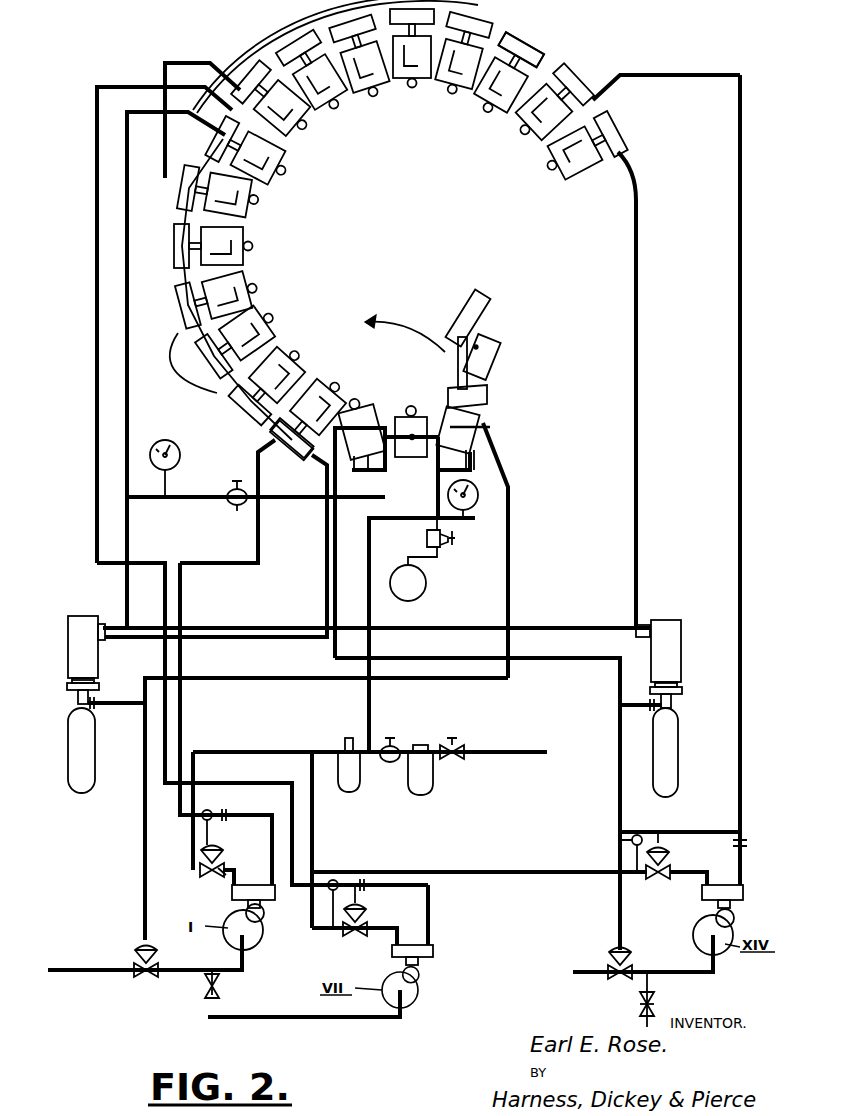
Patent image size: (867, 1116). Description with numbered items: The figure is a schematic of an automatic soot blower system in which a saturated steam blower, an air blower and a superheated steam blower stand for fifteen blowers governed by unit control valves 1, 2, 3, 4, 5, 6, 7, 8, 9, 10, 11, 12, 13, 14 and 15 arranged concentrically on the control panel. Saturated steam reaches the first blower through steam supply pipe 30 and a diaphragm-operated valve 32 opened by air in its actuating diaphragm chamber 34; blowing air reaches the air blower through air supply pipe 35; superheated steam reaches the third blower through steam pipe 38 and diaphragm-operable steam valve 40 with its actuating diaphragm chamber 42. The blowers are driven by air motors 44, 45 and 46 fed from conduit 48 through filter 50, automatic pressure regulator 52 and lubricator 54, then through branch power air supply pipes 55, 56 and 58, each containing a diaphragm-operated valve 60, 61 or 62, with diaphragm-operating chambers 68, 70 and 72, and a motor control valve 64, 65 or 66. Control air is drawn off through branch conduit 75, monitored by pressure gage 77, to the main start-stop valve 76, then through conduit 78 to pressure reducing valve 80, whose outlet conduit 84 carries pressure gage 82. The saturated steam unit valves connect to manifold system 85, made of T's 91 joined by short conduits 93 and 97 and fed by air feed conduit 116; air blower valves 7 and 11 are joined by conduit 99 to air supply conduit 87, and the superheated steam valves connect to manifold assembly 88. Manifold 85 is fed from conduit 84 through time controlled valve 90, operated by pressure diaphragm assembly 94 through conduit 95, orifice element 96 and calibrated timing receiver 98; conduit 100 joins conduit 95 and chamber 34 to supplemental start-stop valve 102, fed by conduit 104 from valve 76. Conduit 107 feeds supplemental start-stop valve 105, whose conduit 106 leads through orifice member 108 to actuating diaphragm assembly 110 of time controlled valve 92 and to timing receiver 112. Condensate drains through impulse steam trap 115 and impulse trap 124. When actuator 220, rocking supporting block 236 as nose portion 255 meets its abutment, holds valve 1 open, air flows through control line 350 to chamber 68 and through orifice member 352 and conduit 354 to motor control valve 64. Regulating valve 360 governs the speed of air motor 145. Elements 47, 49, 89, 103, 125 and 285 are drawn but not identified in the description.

The unit control valve 1 is at (312, 413).
The unit control valve 2 is at (271, 382).
The unit control valve 3 is at (243, 337).
The unit control valve 4 is at (223, 297).
The unit control valve 5 is at (222, 246).
The unit control valve 6 is at (224, 193).
The unit control valve 7 is at (250, 154).
The unit control valve 8 is at (275, 108).
The unit control valve 9 is at (315, 79).
The unit control valve 10 is at (362, 64).
The unit control valve 11 is at (412, 60).
The unit control valve 12 is at (461, 65).
The unit control valve 13 is at (505, 81).
The unit control valve 14 is at (549, 107).
The unit control valve 15 is at (579, 149).
The steam supply pipe 30 is at (110, 975).
The diaphragm-operated valve 32 is at (146, 978).
The actuating diaphragm chamber 34 is at (135, 952).
The air supply pipe 35 is at (320, 1020).
The steam pipe 38 is at (575, 976).
The diaphragm-operable steam valve 40 is at (600, 975).
The actuating diaphragm chamber 42 is at (628, 950).
The air motor 44 is at (256, 916).
The air motor 45 is at (414, 975).
The air motor 46 is at (730, 918).
The pressure line 47 is at (97, 403).
The conduit 48 is at (530, 755).
The pressure line 49 is at (742, 545).
The filter 50 is at (432, 790).
The automatic pressure regulator 52 is at (396, 746).
The lubricator 54 is at (350, 792).
The branch power air supply pipe 55 is at (193, 858).
The branch power air supply pipe 56 is at (312, 935).
The branch power air supply pipe 58 is at (458, 870).
The diaphragm-operated valve 60 is at (204, 878).
The diaphragm-operated valve 61 is at (348, 938).
The diaphragm-operated valve 62 is at (652, 880).
The motor control valve 64 is at (252, 882).
The motor control valve 65 is at (395, 940).
The motor control valve 66 is at (712, 885).
The diaphragm-operating chamber 68 is at (214, 848).
The diaphragm-operating chamber 70 is at (367, 915).
The diaphragm-operating chamber 72 is at (664, 856).
The branch conduit 75 is at (370, 716).
The main start-stop valve 76 is at (414, 415).
The pressure gage 77 is at (466, 511).
The conduit 78 is at (358, 500).
The pressure reducing valve 80 is at (235, 505).
The pressure gage 82 is at (168, 447).
The outlet conduit 84 is at (212, 497).
The manifold system 85 is at (307, 470).
The air supply conduit 87 is at (127, 442).
The manifold assembly 88 is at (623, 131).
The line 89 is at (230, 628).
The pressure-operable time controlled valve 90 is at (70, 628).
The T 91 is at (252, 417).
The short conduit 93 is at (178, 362).
The pressure-operable time controlled valve 92 is at (683, 656).
The pressure diaphragm assembly 94 is at (98, 687).
The conduit 95 is at (125, 706).
The orifice element 96 is at (97, 702).
The short conduit 97 is at (167, 62).
The calibrated timing receiver 98 is at (83, 762).
The conduit 99 is at (305, 14).
The conduit 100 is at (510, 540).
The supplemental start-stop valve 102 is at (485, 400).
The cylinder 103 is at (535, 50).
The conduit 104 is at (470, 470).
The supplemental start-stop valve 105 is at (365, 405).
The conduit 106 is at (338, 548).
The conduit 107 is at (588, 52).
The orifice member 108 is at (648, 708).
The actuating diaphragm assembly 110 is at (680, 690).
The timing receiver 112 is at (678, 766).
The impulse steam trap 115 is at (219, 987).
The air feed conduit 116 is at (327, 571).
The impulse trap 124 is at (640, 1008).
The line 125 is at (638, 580).
The air motor 145 is at (420, 598).
The actuator 220 is at (485, 321).
The supporting block 236 is at (492, 345).
The nose portion 255 is at (416, 352).
The slide block 285 is at (445, 382).
The control line 350 is at (258, 560).
The orifice member 352 is at (226, 815).
The conduit 354 is at (238, 861).
The regulating valve 360 is at (440, 560).